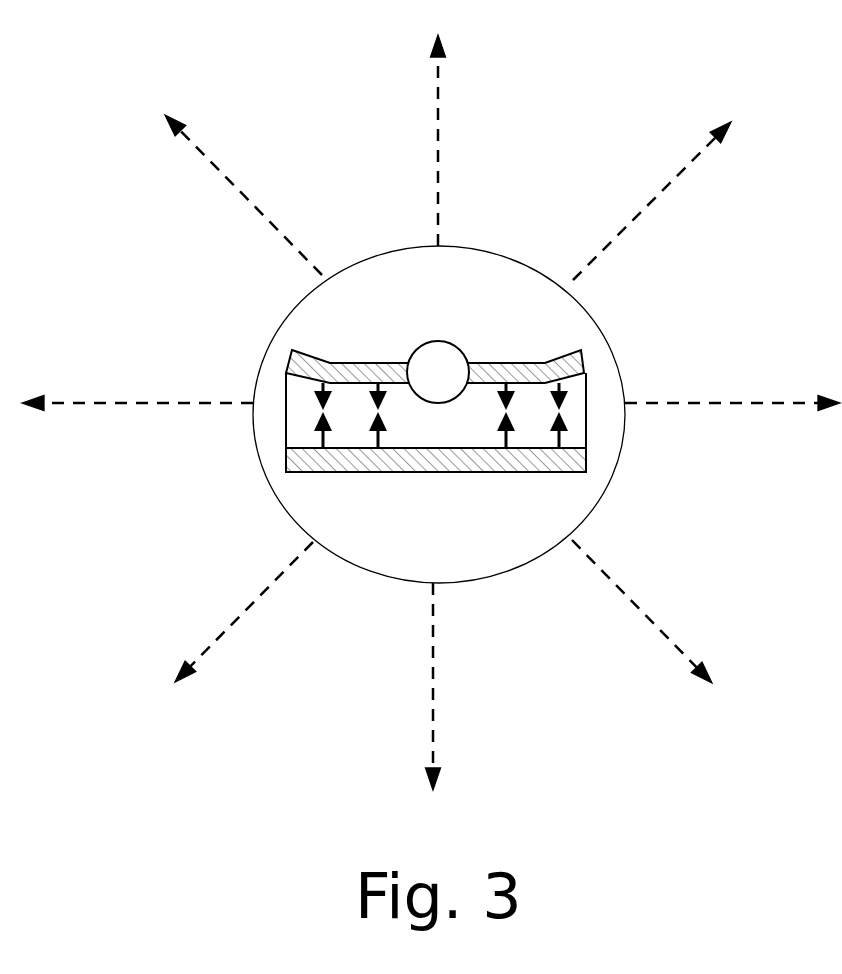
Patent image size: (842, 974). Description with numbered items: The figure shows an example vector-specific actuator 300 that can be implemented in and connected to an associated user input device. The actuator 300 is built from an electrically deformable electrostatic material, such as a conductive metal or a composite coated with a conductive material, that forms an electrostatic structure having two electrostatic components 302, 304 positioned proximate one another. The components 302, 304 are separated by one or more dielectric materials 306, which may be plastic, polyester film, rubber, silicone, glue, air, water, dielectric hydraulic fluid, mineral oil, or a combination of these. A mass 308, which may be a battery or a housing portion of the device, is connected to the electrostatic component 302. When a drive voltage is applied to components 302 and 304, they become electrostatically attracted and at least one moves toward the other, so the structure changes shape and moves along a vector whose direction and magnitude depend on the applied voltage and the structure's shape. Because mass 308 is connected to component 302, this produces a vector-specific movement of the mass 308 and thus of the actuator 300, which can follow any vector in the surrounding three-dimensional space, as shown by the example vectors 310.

The vector-specific actuator 300 is at (403, 248).
The electrostatic component 302 is at (380, 362).
The electrostatic component 304 is at (463, 472).
The dielectric material 306 is at (424, 438).
The mass 308 is at (419, 382).
The example vectors 310 is at (421, 108).